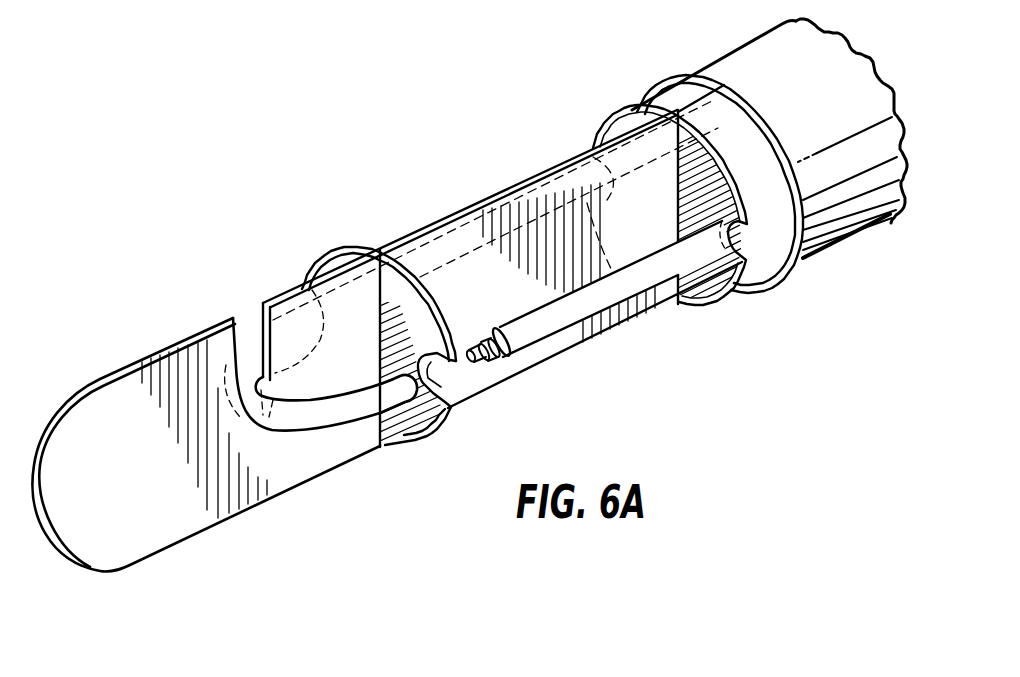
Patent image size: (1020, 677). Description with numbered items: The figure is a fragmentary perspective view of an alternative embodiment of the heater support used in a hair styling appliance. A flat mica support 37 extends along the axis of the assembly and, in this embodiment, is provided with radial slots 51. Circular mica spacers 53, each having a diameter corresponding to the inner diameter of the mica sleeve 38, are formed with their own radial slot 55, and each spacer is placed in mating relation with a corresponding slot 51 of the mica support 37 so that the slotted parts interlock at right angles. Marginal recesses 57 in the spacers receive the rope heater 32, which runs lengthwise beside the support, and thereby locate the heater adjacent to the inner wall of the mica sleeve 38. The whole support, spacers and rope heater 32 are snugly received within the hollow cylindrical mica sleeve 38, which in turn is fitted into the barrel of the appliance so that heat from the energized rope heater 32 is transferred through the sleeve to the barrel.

The rope heater 32 is at (571, 320).
The mica support 37 is at (148, 471).
The mica sleeve 38 is at (826, 248).
The radial slots 51 is at (352, 293).
The circular mica spacers 53 is at (432, 315).
The radial slot 55 is at (372, 432).
The marginal recesses 57 is at (440, 418).